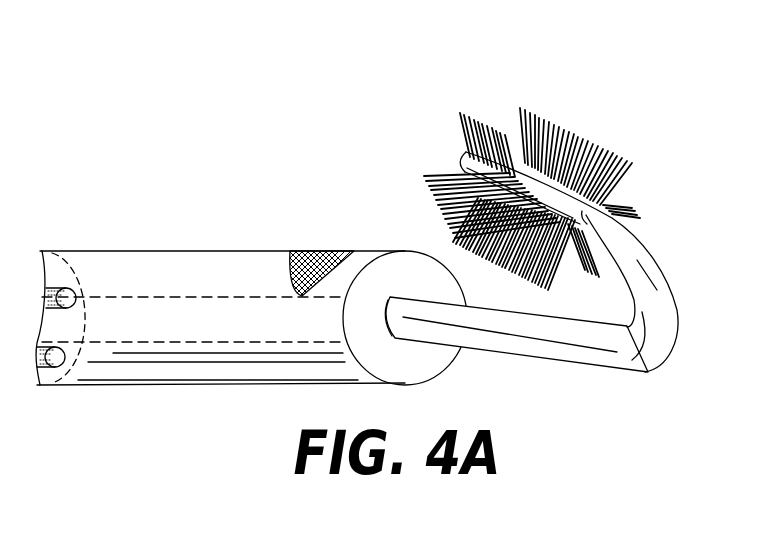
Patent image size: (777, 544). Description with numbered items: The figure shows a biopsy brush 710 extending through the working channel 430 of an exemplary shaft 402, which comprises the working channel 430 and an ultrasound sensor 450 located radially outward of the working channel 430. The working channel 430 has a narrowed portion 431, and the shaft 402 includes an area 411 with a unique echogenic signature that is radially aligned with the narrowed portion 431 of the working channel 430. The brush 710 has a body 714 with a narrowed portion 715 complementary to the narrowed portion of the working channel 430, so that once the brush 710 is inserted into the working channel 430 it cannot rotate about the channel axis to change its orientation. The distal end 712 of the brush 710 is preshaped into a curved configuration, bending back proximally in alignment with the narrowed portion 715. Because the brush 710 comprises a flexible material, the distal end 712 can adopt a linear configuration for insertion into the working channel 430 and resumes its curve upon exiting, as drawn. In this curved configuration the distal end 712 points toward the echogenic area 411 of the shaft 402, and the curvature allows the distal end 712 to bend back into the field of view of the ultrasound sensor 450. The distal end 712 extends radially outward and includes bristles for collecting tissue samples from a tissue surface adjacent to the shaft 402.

The shaft 402 is at (193, 384).
The ultrasound sensor 450 is at (113, 270).
The working channel 430 is at (140, 320).
The echogenic area 411 is at (303, 252).
The narrowed portion of the working channel 431 is at (378, 296).
The narrowed portion of the brush body 715 is at (468, 303).
The body 714 is at (552, 372).
The biopsy brush 710 is at (653, 358).
The distal end 712 is at (548, 118).